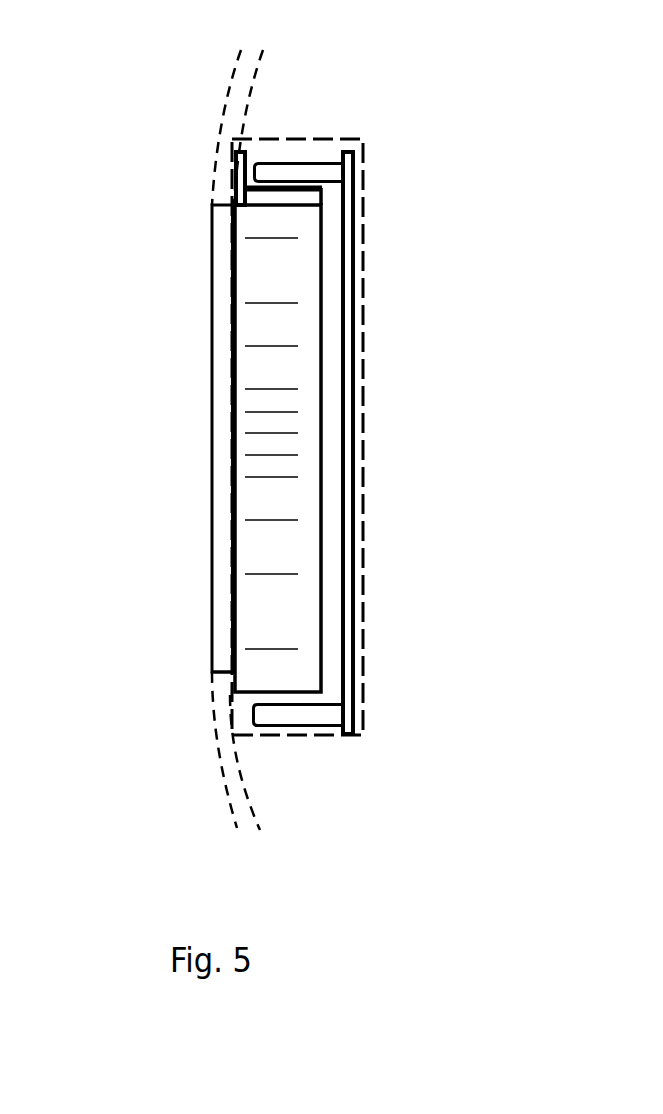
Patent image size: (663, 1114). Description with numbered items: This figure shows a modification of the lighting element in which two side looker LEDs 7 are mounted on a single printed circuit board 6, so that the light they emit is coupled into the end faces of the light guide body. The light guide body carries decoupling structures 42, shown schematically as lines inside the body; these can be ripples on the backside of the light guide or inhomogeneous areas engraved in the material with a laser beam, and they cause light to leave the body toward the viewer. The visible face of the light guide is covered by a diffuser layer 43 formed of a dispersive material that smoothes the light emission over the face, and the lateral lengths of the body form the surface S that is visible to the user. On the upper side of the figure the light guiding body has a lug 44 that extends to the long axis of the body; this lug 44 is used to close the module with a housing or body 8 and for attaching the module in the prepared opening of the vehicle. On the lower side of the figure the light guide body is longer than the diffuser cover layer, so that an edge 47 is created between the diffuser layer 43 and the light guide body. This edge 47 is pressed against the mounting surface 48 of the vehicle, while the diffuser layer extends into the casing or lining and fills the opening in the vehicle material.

The printed circuit board 6 is at (350, 417).
The side looker LED 7 is at (268, 173).
The housing or body 8 is at (373, 266).
The decoupling structures 42 is at (285, 573).
The diffuser layer 43 is at (212, 412).
The lug 44 is at (247, 172).
The edge 47 is at (214, 672).
The mounting surface 48 is at (212, 118).
The surface S is at (130, 266).